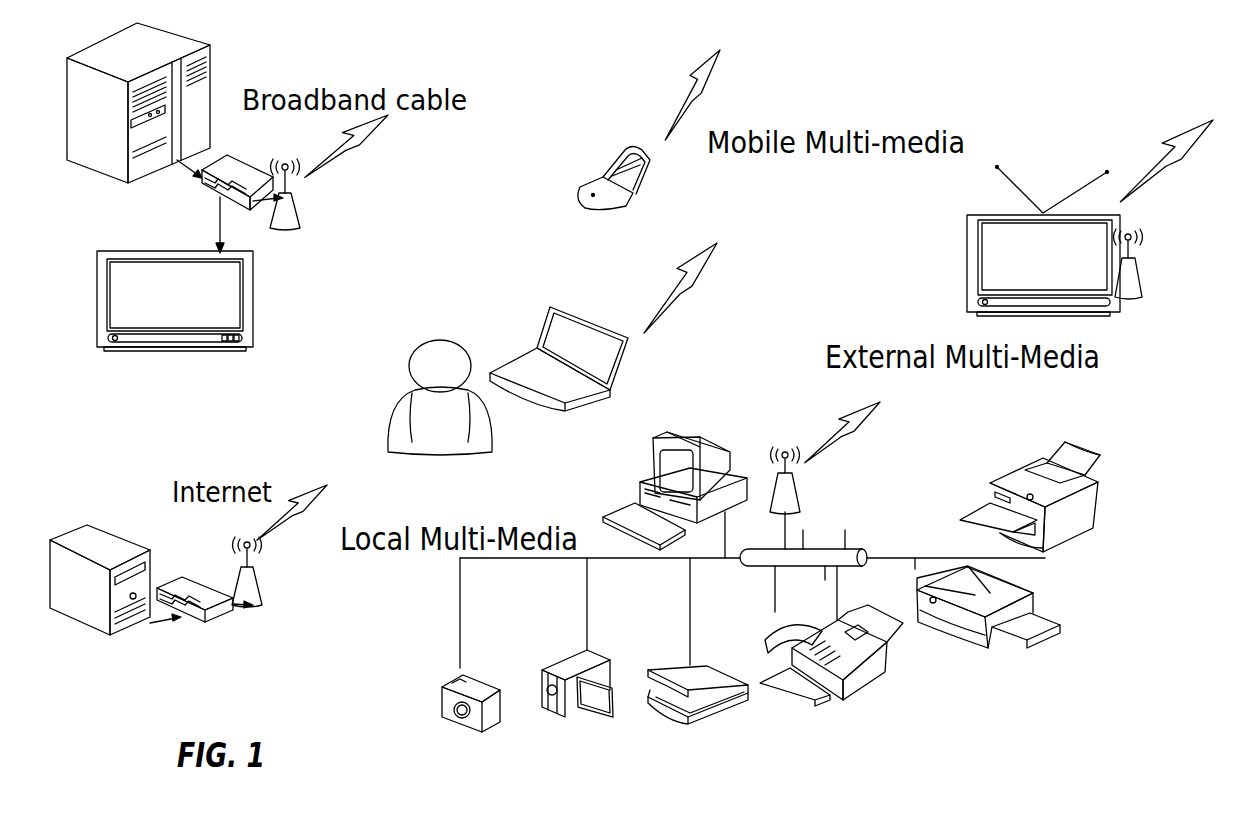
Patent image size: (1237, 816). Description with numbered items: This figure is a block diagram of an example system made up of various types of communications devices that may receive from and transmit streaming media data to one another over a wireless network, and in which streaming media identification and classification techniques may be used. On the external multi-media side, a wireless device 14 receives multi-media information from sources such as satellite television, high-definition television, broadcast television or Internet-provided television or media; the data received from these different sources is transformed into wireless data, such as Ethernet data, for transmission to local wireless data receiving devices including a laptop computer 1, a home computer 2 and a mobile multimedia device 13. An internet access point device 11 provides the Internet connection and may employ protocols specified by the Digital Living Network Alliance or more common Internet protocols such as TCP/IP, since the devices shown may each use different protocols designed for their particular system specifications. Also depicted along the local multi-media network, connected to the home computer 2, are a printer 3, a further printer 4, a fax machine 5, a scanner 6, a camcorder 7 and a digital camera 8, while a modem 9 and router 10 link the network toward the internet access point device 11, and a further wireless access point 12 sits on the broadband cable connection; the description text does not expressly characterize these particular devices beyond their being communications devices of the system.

The laptop computer 1 is at (626, 352).
The home computer 2 is at (705, 441).
The printer 3 is at (1050, 545).
The multifunction printer 4 is at (968, 650).
The fax machine 5 is at (838, 700).
The scanner 6 is at (672, 722).
The camcorder 7 is at (588, 712).
The digital camera 8 is at (478, 735).
The modem 9 is at (208, 620).
The router 10 is at (208, 622).
The internet access point device 11 is at (254, 572).
The wireless access point 12 is at (292, 197).
The mobile multimedia device 13 is at (640, 188).
The wireless device 14 is at (1118, 306).